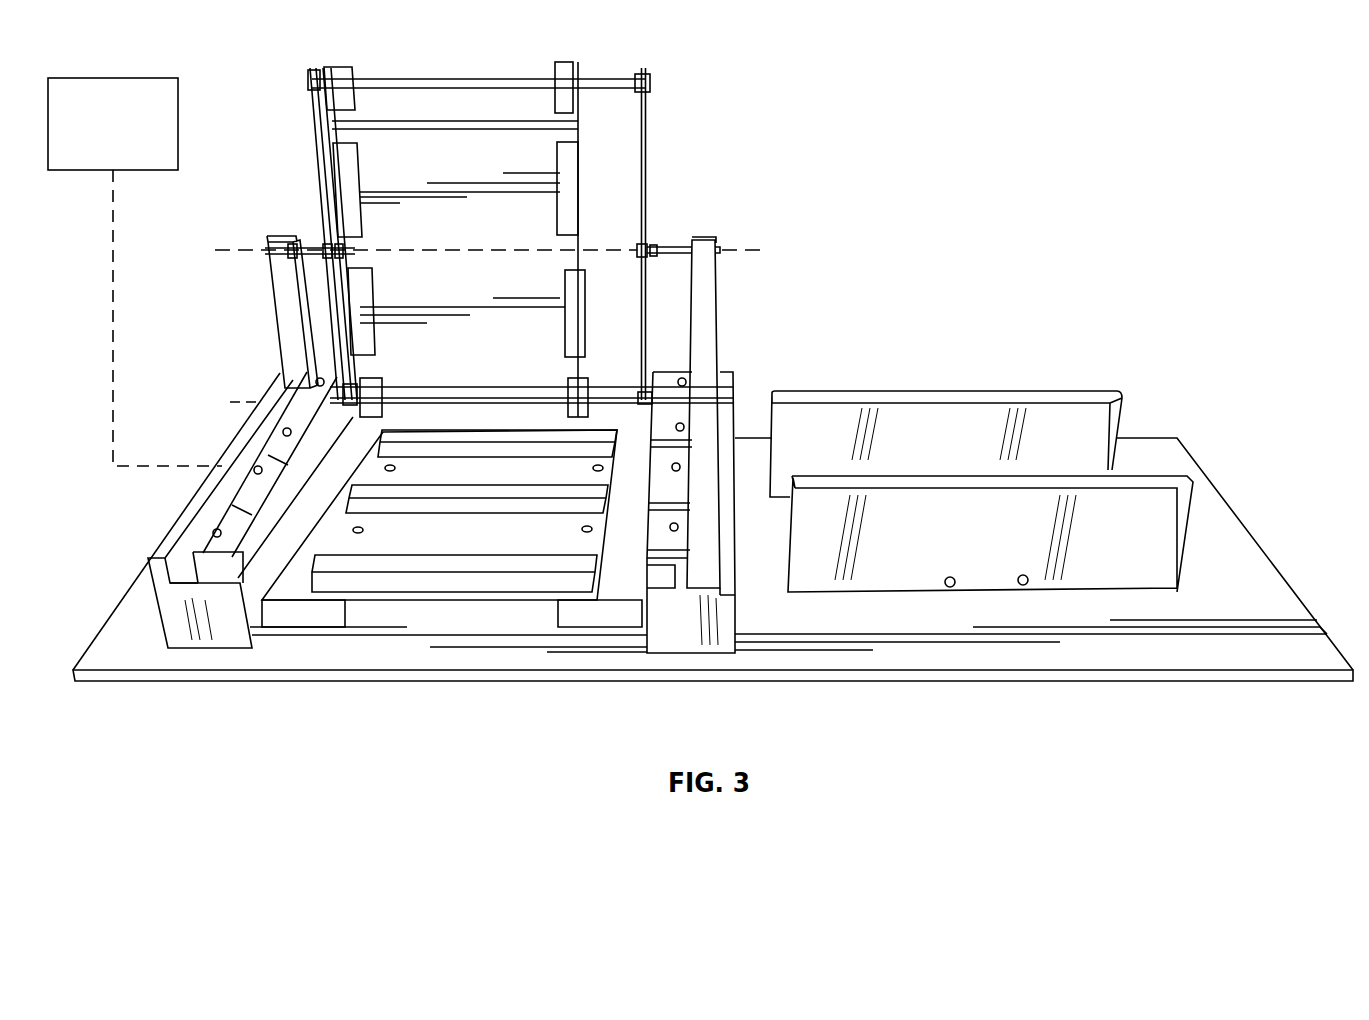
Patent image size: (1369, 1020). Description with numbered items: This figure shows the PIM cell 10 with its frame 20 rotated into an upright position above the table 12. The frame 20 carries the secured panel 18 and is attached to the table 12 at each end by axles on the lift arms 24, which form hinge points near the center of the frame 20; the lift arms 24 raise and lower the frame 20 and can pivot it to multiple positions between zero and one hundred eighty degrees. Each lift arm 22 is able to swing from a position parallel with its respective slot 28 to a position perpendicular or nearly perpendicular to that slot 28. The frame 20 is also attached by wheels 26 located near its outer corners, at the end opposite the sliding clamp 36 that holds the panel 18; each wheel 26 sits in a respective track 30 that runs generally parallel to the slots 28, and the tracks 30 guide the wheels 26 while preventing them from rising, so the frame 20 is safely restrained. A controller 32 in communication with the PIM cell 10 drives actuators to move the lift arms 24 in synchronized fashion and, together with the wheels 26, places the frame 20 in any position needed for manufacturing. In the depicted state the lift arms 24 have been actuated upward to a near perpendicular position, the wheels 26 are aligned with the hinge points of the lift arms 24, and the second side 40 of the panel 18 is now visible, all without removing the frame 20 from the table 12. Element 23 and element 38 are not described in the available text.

The PIM cell 10 is at (794, 313).
The table 12 is at (507, 713).
The panel 18 is at (404, 140).
The frame 20 is at (350, 150).
The lift arm 22 is at (177, 620).
The reference axis / stop blocks 23 is at (740, 248).
The lift arms 24 is at (282, 268).
The wheels 26 is at (332, 408).
The slot 28 is at (190, 562).
The track 30 is at (245, 640).
The controller 32 is at (98, 138).
The sliding clamp 36 is at (578, 251).
The slat 38 is at (362, 545).
The second side 40 is at (340, 248).